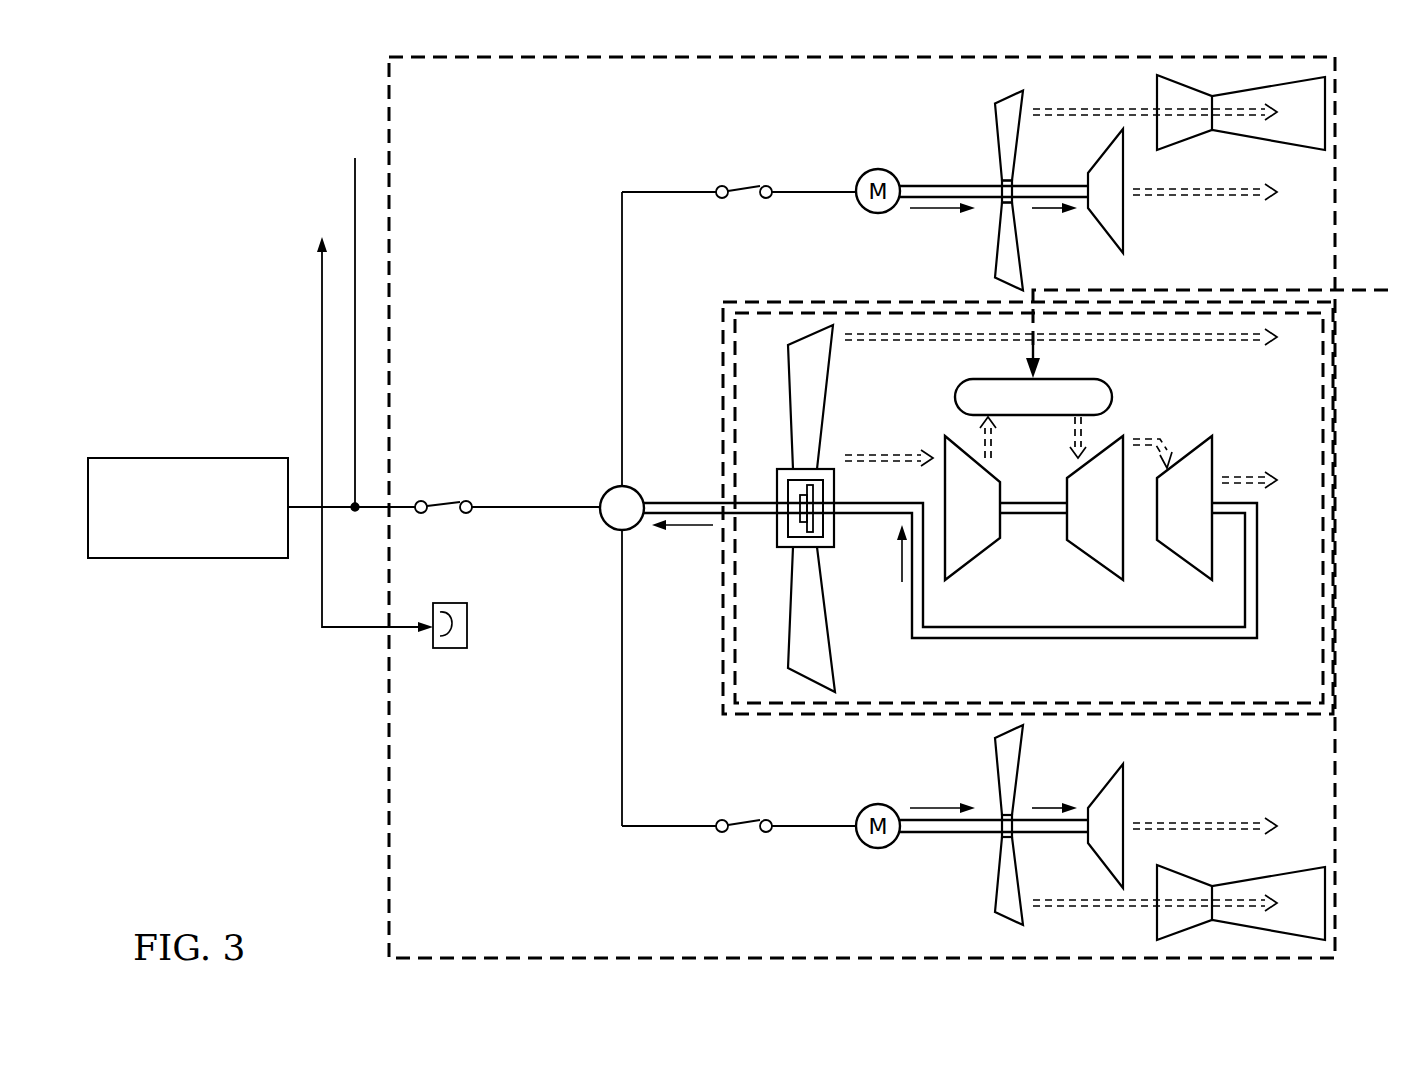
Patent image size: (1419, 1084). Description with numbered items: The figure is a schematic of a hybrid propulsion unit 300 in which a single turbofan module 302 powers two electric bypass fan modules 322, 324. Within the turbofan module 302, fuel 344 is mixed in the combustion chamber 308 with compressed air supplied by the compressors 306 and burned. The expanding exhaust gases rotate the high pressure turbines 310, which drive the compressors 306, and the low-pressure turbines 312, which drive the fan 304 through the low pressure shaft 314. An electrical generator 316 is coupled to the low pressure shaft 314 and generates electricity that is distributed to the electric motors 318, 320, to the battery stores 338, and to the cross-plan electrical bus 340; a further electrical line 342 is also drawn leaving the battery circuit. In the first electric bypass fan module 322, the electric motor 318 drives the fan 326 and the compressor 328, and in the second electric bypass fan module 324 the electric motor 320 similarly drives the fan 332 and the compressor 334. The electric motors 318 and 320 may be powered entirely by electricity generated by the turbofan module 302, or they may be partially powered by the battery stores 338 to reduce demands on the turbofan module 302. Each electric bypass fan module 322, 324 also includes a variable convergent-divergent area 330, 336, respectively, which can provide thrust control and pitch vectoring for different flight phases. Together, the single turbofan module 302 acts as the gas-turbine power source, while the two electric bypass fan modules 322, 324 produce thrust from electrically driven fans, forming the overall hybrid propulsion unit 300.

The hybrid propulsion unit 300 is at (168, 92).
The turbofan module 302 is at (1070, 508).
The fan 304 is at (827, 397).
The compressors 306 is at (975, 560).
The combustion chamber 308 is at (1112, 395).
The high pressure turbines 310 is at (1097, 560).
The low-pressure turbines 312 is at (1180, 560).
The low pressure shaft 314 is at (873, 515).
The electrical generator 316 is at (614, 487).
The electric motor 318 is at (868, 848).
The electric motor 320 is at (872, 168).
The electric bypass fan module 322 is at (1057, 838).
The electric bypass fan module 324 is at (1057, 178).
The fan 326 is at (993, 876).
The compressor 328 is at (1123, 805).
The variable convergent-divergent area 330 is at (1155, 923).
The fan 332 is at (993, 140).
The compressor 334 is at (1123, 212).
The variable convergent-divergent area 336 is at (1155, 93).
The battery stores 338 is at (190, 558).
The cross-plan electrical bus 340 is at (355, 200).
The electrical power line to inverter 342 is at (322, 312).
The fuel 344 is at (1370, 290).